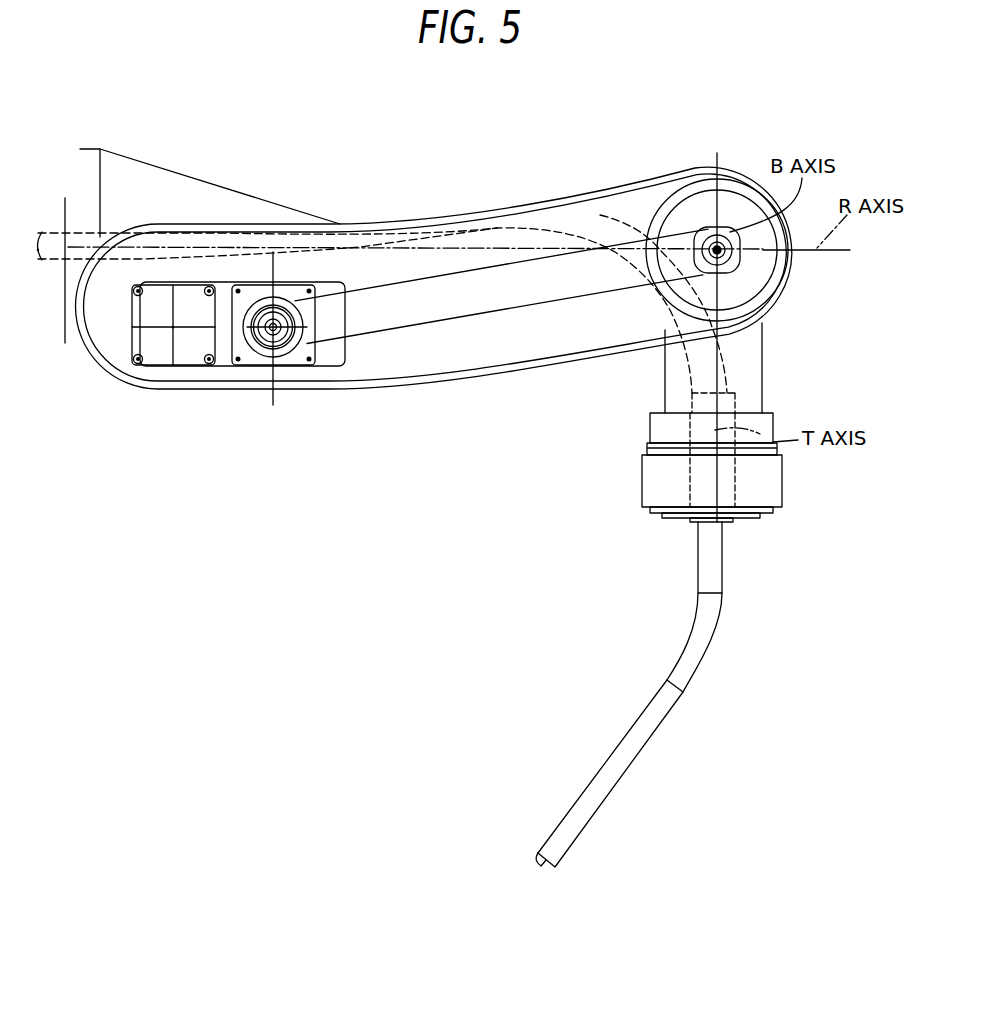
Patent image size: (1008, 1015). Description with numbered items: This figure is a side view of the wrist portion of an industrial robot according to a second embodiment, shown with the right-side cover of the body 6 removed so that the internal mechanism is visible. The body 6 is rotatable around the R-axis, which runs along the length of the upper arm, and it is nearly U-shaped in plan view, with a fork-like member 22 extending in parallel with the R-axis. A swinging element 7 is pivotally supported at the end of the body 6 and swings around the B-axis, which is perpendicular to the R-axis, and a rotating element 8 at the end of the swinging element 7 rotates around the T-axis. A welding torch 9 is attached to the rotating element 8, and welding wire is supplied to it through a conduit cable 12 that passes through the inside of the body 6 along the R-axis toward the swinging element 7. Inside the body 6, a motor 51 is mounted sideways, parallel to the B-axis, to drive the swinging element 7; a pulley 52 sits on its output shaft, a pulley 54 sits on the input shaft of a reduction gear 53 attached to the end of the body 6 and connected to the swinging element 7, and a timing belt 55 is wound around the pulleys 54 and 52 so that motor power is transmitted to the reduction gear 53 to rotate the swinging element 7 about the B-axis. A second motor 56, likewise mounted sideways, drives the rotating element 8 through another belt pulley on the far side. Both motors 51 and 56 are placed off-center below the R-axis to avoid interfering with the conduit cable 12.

The body 6 is at (173, 172).
The swinging element 7 is at (747, 373).
The rotating element 8 is at (743, 520).
The welding torch 9 is at (640, 737).
The conduit cable 12 is at (503, 207).
The member 22 is at (607, 190).
The motor 51 is at (293, 363).
The pulley 52 is at (335, 333).
The reduction gear 53 is at (770, 265).
The pulley 54 is at (777, 297).
The timing belt 55 is at (502, 306).
The motor 56 is at (160, 357).